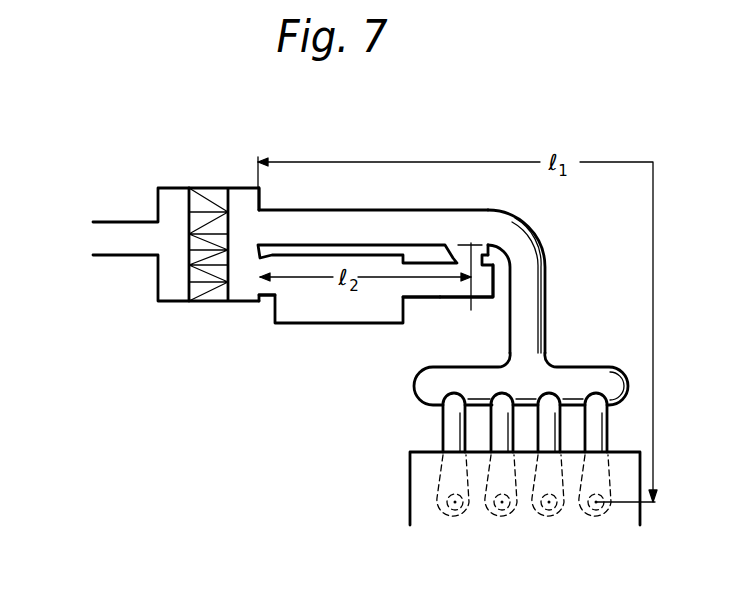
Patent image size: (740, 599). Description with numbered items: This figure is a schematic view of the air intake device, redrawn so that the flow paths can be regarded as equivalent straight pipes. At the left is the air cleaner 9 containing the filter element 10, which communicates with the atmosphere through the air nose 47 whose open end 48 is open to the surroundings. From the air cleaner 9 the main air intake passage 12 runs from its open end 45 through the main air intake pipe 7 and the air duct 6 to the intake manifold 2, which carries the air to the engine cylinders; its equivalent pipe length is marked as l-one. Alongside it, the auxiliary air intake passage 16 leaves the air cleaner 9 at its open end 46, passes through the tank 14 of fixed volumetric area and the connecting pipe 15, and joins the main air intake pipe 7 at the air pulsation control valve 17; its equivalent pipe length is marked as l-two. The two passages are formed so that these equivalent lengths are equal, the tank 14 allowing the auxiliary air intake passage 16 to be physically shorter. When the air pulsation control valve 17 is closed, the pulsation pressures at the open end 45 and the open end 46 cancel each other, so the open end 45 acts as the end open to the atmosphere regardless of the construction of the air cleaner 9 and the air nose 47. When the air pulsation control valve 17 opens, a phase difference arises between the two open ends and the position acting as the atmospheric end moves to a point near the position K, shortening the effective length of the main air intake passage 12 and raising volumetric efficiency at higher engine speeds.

The intake manifold 2 is at (582, 367).
The air duct 6 is at (546, 279).
The main air intake pipe 7 is at (404, 210).
The air cleaner 9 is at (239, 188).
The filter element 10 is at (205, 195).
The main air intake passage 12 is at (345, 218).
The tank 14 is at (325, 324).
The connecting pipe 15 is at (455, 298).
The auxiliary air intake passage 16 is at (417, 298).
The air pulsation control valve 17 is at (471, 241).
The open end of the main air intake passage 45 is at (262, 232).
The open end of the auxiliary air intake passage 46 is at (264, 297).
The air nose 47 is at (113, 258).
The open end of the air nose 48 is at (93, 238).
The position K is at (439, 229).